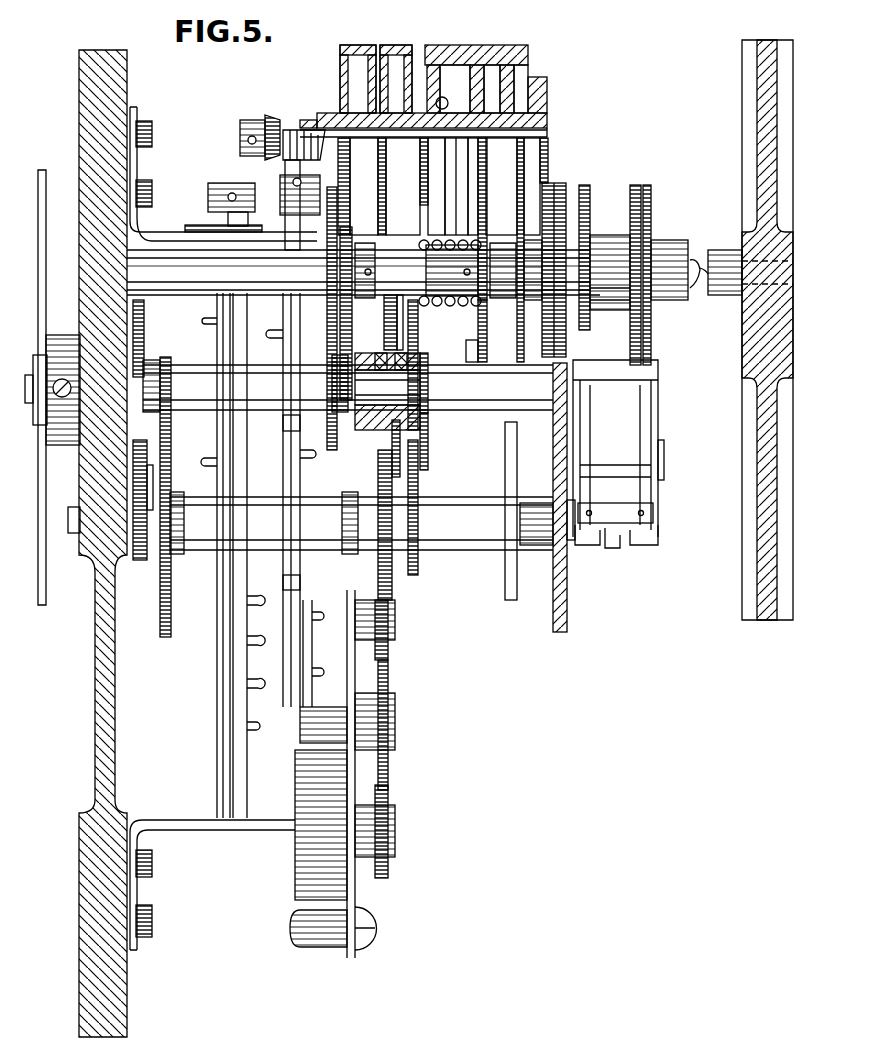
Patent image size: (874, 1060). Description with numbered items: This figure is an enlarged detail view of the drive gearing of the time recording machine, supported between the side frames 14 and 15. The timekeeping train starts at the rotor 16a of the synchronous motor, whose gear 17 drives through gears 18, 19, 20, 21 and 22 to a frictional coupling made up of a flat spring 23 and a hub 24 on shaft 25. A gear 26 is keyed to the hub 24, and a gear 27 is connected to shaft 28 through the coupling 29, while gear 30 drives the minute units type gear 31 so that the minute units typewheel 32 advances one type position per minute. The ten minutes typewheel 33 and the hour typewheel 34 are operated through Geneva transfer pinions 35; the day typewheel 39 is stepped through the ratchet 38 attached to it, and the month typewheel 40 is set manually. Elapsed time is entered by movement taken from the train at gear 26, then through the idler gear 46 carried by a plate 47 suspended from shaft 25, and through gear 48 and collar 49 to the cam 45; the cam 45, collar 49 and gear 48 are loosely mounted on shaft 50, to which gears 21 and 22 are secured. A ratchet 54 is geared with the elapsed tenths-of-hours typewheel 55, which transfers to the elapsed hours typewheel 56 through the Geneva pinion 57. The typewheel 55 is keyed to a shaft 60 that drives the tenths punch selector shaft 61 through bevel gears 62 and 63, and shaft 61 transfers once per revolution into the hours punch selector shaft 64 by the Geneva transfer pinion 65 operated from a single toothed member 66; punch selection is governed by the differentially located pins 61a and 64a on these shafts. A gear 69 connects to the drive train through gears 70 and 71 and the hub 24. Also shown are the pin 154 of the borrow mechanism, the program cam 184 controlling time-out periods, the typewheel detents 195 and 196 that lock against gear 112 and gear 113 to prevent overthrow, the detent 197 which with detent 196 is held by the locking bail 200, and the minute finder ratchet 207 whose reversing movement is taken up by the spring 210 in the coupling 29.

The side frame 14 is at (100, 888).
The side frame 15 is at (767, 518).
The rotor 16a is at (295, 878).
The gear 17 is at (392, 810).
The gear 18 is at (388, 763).
The gear 19 is at (390, 650).
The gear 20 is at (380, 555).
The gear 21 is at (392, 560).
The gear 22 is at (385, 320).
The flat spring 23 is at (400, 300).
The hub 24 is at (415, 378).
The shaft 25 is at (410, 388).
The gear 26 is at (405, 358).
The gear 27 is at (408, 350).
The shaft 28 is at (395, 262).
The coupling 29 is at (445, 300).
The gear 30 is at (487, 350).
The minute units type gear 31 is at (487, 157).
The minute units typewheel 32 is at (563, 195).
The ten minutes typewheel 33 is at (500, 143).
The hour typewheel 34 is at (433, 140).
The Geneva transfer pinions 35 is at (463, 147).
The ratchet 38 is at (370, 118).
The day typewheel 39 is at (398, 55).
The month typewheel 40 is at (358, 55).
The cam 45 is at (559, 618).
The idler gear 46 is at (428, 455).
The plate 47 is at (428, 420).
The gear 48 is at (418, 490).
The collar 49 is at (472, 548).
The shaft 50 is at (545, 548).
The ratchet 54 is at (590, 186).
The elapsed tenths-of-hours typewheel 55 is at (521, 142).
The elapsed hours typewheel 56 is at (547, 124).
The Geneva pinion 57 is at (545, 92).
The shaft 60 is at (297, 128).
The tenths punch selector shaft 61 is at (290, 325).
The pins 61a is at (318, 622).
The bevel gear 62 is at (273, 113).
The bevel gear 63 is at (270, 165).
The hours punch selector shaft 64 is at (227, 350).
The pins 64a is at (258, 684).
The Geneva transfer pinion 65 is at (240, 223).
The single toothed member 66 is at (278, 200).
The gear 69 is at (300, 583).
The gear 70 is at (300, 423).
The gear 71 is at (348, 428).
The gear 112 is at (598, 305).
The gear 113 is at (645, 200).
The pin 154 is at (595, 290).
The program cam 184 is at (43, 527).
The typewheel detent 195 is at (598, 542).
The typewheel detent 196 is at (620, 540).
The detent 197 is at (655, 550).
The locking bail 200 is at (657, 410).
The minute finder ratchet 207 is at (480, 338).
The spring 210 is at (425, 242).